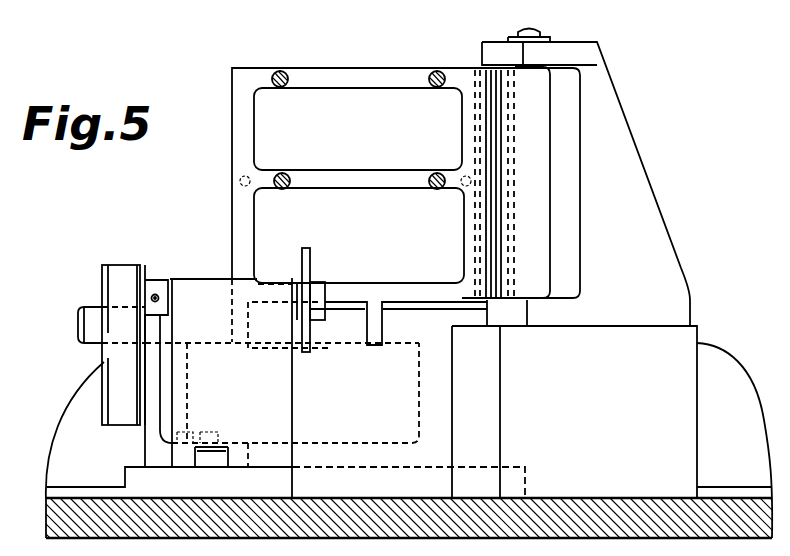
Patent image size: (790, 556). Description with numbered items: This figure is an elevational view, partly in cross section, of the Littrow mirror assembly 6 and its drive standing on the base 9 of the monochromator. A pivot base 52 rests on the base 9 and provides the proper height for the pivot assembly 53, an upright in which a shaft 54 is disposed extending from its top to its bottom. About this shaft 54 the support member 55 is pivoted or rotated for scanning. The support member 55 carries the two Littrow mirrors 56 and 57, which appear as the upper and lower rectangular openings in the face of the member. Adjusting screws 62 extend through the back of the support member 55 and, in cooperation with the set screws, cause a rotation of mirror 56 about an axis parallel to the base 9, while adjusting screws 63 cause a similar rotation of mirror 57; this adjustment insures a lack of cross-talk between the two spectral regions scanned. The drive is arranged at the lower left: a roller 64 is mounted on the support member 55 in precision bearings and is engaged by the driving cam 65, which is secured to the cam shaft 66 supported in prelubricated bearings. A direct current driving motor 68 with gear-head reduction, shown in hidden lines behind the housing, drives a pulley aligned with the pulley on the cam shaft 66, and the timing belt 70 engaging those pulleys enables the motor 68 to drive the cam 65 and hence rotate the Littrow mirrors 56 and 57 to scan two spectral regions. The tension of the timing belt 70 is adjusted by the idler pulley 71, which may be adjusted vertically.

The Littrow mirror assembly 6 is at (668, 102).
The base 9 is at (652, 526).
The pivot base 52 is at (688, 335).
The pivot assembly 53 is at (648, 190).
The shaft 54 is at (534, 30).
The support member 55 is at (375, 70).
The Littrow mirror 56 is at (262, 141).
The Littrow mirror 57 is at (262, 231).
The adjusting screws 62 is at (437, 62).
The adjusting screws 63 is at (431, 198).
The roller 64 is at (350, 330).
The driving cam 65 is at (306, 354).
The cam shaft 66 is at (168, 285).
The driving motor 68 is at (409, 345).
The timing belt 70 is at (120, 266).
The idler pulley 71 is at (78, 320).